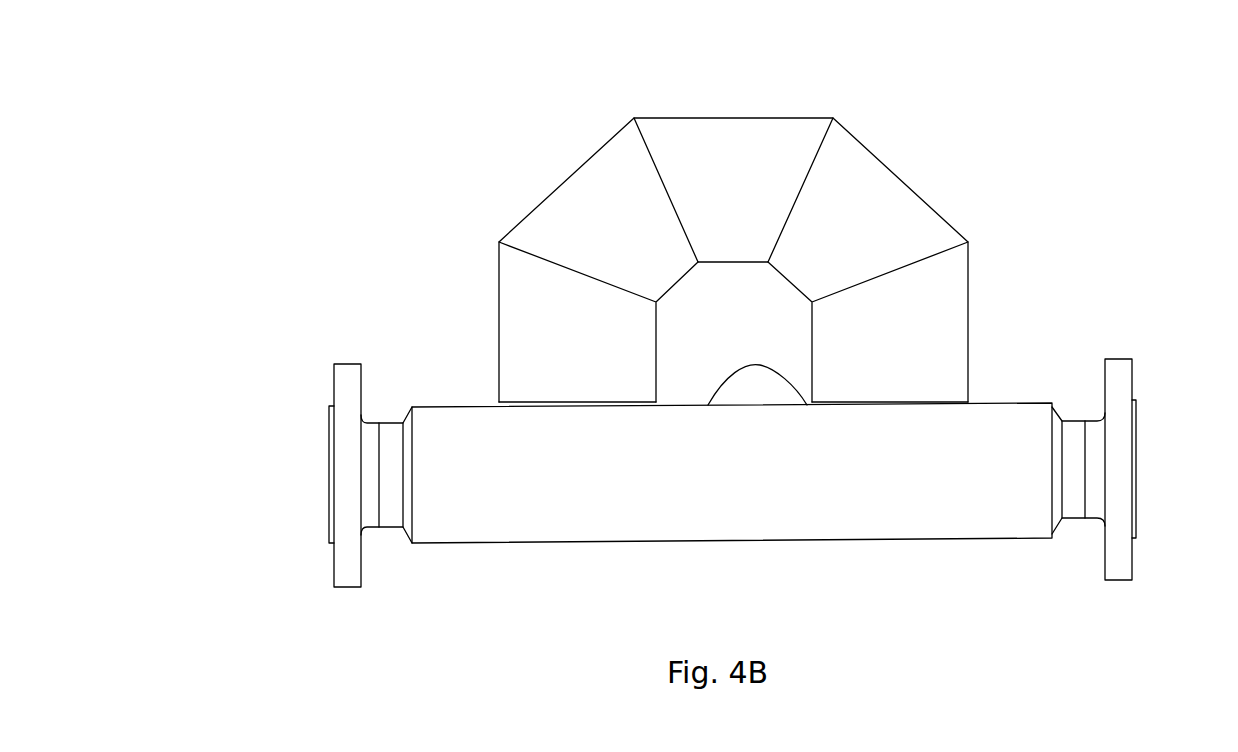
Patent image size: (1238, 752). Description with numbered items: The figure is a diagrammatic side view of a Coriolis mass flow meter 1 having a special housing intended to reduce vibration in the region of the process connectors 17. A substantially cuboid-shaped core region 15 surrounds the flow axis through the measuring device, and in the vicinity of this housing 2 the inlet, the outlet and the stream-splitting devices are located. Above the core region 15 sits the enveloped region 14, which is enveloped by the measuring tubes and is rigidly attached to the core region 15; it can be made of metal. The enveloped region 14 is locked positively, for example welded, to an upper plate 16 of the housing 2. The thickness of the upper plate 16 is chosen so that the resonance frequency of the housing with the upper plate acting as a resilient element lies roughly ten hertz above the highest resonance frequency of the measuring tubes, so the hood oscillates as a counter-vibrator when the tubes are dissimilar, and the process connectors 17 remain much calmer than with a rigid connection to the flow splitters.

The Coriolis mass flow meter 1 is at (306, 160).
The housing 2 is at (457, 406).
The enveloped region 14 is at (760, 152).
The core region 15 is at (478, 543).
The upper plate 16 is at (807, 405).
The process connectors 17 is at (342, 565).